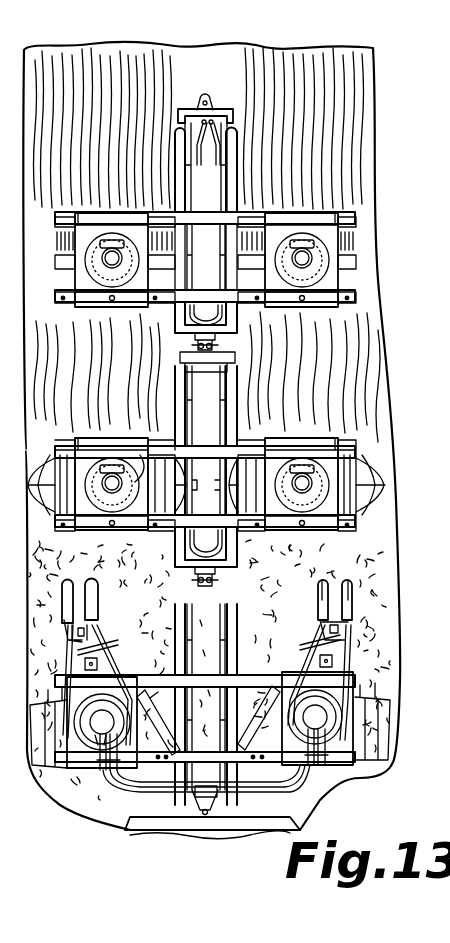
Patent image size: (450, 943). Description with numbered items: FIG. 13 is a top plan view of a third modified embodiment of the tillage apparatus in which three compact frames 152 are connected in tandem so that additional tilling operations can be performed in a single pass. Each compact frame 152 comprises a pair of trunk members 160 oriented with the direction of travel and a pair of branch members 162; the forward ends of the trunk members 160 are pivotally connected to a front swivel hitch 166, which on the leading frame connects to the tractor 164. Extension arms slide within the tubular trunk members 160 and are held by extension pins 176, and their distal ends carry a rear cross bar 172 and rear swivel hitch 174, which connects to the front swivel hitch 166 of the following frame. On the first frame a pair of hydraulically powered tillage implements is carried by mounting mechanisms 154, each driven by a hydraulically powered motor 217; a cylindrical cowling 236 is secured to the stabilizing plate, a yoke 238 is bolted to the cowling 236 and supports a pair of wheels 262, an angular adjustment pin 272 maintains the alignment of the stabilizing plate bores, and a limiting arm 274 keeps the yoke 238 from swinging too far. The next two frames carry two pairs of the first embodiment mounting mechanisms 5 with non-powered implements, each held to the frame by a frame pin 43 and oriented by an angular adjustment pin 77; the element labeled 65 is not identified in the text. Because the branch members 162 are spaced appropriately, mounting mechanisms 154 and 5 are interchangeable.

The mounting mechanism 5 is at (90, 304).
The frame pin 43 is at (300, 297).
The drive shaft 65 is at (140, 455).
The angular adjustment pin 77 is at (125, 268).
The compact frame 152 is at (155, 305).
The mounting mechanism 154 is at (352, 765).
The trunk members 160 is at (180, 410).
The branch members 162 is at (358, 446).
The tractor 164 is at (140, 820).
The front swivel hitch 166 is at (216, 347).
The rear cross bar 172 is at (192, 108).
The rear swivel hitch 174 is at (204, 98).
The extension pin 176 is at (178, 385).
The hydraulically powered motor 217 is at (96, 735).
The cowling 236 is at (357, 696).
The yoke 238 is at (95, 640).
The wheels 262 is at (347, 578).
The angular adjustment pin 272 is at (100, 668).
The limiting arm 274 is at (318, 662).